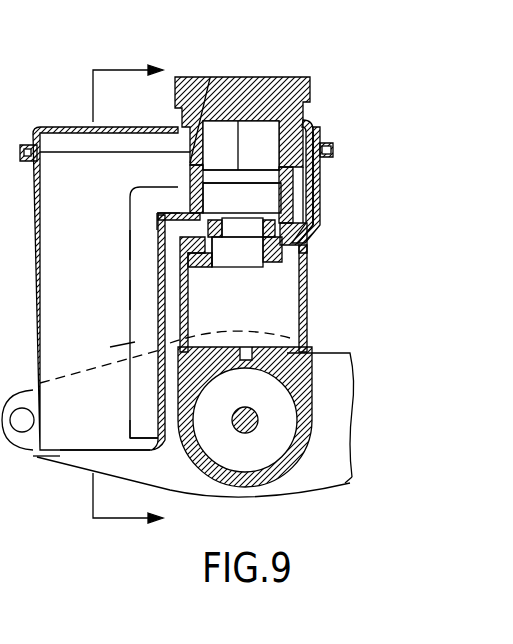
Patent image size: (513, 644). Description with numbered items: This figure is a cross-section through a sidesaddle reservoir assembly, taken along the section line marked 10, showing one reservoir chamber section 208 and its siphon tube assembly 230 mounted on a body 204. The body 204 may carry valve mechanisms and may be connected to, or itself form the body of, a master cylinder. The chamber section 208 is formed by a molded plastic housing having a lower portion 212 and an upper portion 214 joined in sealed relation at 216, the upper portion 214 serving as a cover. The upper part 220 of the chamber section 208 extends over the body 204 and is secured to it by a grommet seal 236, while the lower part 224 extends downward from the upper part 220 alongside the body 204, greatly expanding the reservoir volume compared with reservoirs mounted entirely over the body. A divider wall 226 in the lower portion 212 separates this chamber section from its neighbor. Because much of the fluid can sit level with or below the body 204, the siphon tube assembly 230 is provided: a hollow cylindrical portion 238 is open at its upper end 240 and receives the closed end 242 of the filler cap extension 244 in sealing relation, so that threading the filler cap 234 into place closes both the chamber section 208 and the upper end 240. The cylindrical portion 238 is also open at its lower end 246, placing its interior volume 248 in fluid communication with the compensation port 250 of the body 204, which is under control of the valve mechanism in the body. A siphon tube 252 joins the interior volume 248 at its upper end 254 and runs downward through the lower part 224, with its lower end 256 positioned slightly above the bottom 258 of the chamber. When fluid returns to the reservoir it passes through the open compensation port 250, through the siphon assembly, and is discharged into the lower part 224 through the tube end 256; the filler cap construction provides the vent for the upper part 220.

The section line 10 is at (139, 298).
The body 204 is at (310, 450).
The reservoir chamber section 208 is at (70, 138).
The lower portion 212 is at (347, 220).
The upper portion 214 is at (307, 123).
The sealed joint 216 is at (333, 148).
The upper part 220 is at (307, 194).
The lower part 224 is at (110, 438).
The divider wall 226 is at (186, 335).
The siphon tube assembly 230 is at (130, 242).
The filler cap 234 is at (265, 77).
The grommet seal 236 is at (307, 275).
The hollow cylindrical portion 238 is at (307, 237).
The upper end 240 is at (190, 177).
The closed end 242 is at (235, 82).
The filler cap extension 244 is at (200, 167).
The lower end 246 is at (255, 245).
The interior volume 248 is at (245, 212).
The compensation port 250 is at (247, 353).
The siphon tube 252 is at (130, 293).
The upper end 254 is at (155, 201).
The lower end 256 is at (135, 427).
The bottom 258 is at (38, 457).